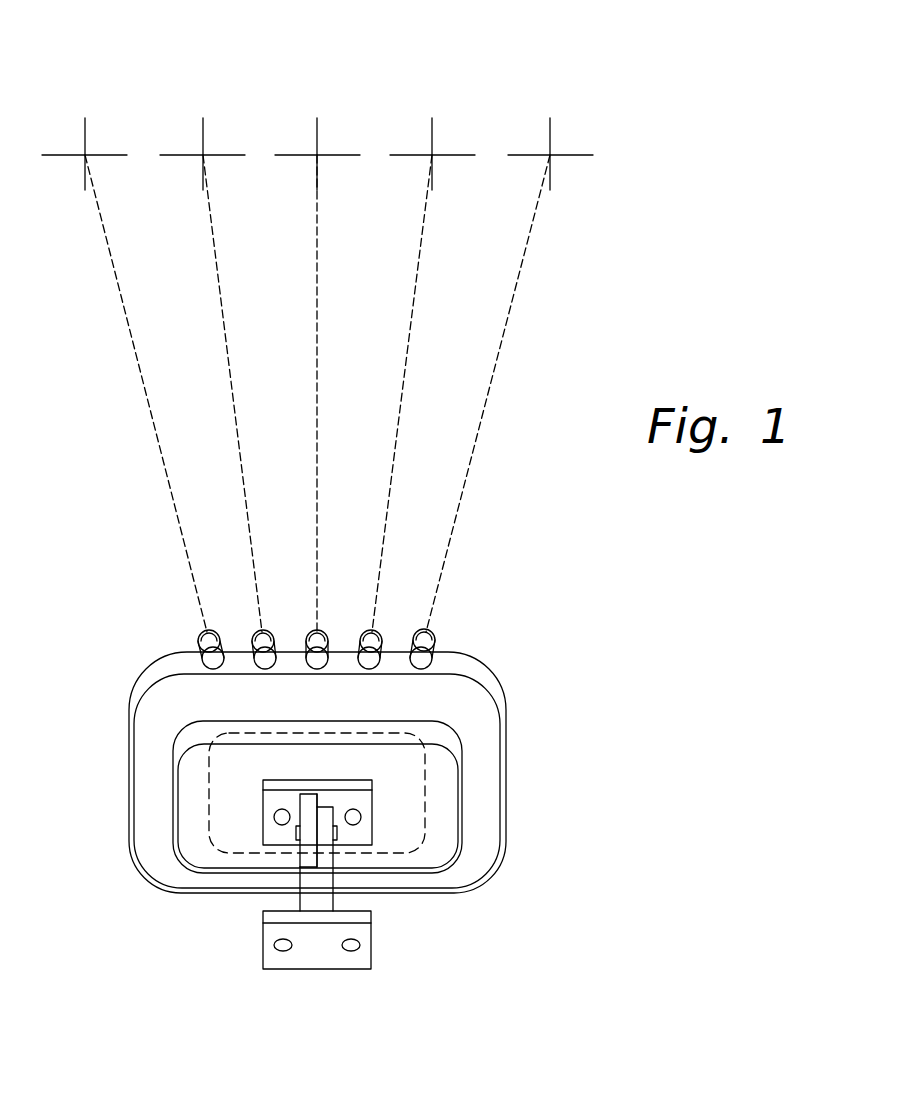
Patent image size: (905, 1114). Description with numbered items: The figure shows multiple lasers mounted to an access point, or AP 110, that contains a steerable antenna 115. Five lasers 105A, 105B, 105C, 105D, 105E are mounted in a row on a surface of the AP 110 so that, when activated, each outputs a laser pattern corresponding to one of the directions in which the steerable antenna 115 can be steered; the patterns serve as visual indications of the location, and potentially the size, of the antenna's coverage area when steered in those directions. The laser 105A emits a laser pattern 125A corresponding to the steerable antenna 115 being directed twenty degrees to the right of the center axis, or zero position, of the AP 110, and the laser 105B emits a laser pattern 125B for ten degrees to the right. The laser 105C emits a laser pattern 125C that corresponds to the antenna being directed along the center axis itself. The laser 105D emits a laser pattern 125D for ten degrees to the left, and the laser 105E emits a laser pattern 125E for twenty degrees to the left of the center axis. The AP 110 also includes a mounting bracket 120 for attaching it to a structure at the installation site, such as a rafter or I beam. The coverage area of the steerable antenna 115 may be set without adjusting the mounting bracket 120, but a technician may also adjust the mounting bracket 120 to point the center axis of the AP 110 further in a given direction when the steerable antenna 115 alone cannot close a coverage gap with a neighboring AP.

The laser 105A is at (432, 636).
The laser 105B is at (371, 668).
The laser 105C is at (317, 668).
The laser 105D is at (265, 668).
The laser 105E is at (204, 635).
The AP 110 is at (507, 729).
The steerable antenna 115 is at (424, 810).
The mounting bracket 120 is at (372, 938).
The laser pattern 125A is at (550, 80).
The laser pattern 125B is at (432, 80).
The laser pattern 125C is at (317, 80).
The laser pattern 125D is at (203, 80).
The laser pattern 125E is at (85, 80).